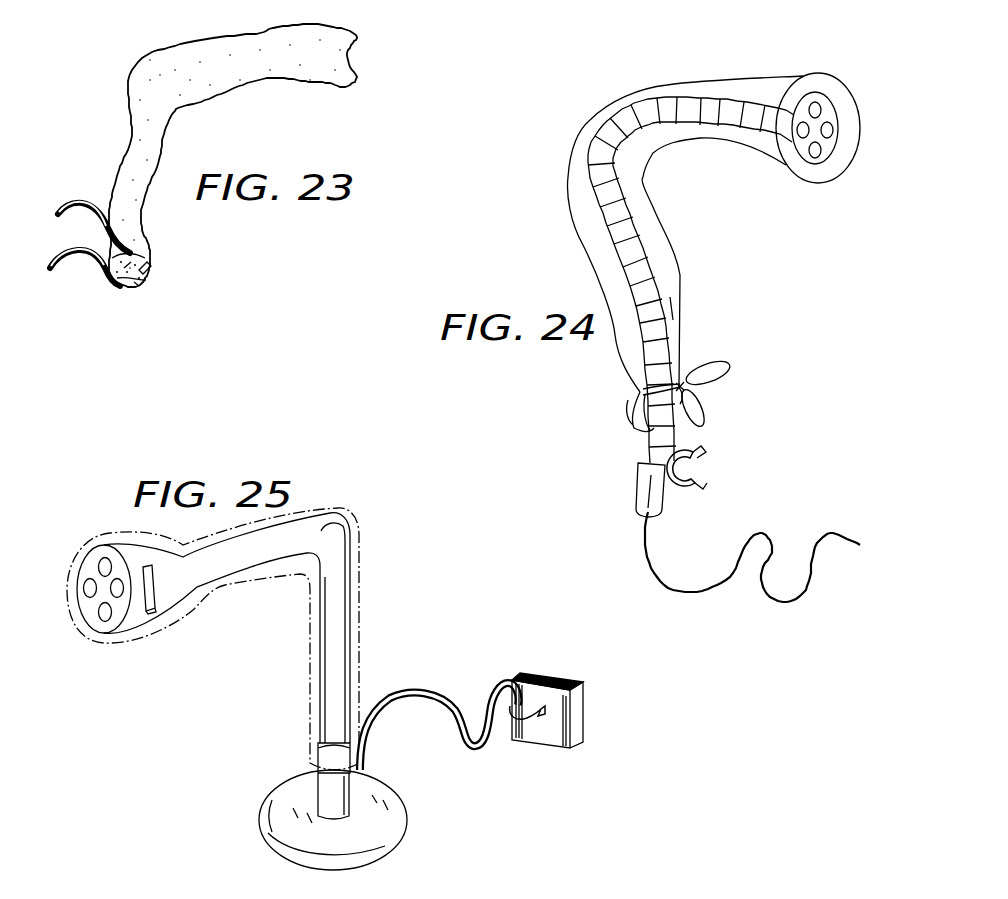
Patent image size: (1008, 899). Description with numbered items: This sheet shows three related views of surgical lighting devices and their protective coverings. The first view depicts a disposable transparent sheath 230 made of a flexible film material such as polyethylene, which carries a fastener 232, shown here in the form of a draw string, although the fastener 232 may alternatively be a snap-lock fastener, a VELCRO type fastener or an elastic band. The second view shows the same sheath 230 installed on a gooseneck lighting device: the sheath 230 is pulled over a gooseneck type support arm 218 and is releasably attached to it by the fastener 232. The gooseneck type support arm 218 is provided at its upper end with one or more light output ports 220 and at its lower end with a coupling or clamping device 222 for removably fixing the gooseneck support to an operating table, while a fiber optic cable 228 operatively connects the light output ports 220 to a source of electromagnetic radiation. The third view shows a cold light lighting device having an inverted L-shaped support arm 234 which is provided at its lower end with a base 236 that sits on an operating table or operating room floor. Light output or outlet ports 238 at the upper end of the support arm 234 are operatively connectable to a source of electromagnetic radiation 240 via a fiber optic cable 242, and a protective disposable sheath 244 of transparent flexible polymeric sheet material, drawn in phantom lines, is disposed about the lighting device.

In FIG. 24, the gooseneck type support arm 218 is at (598, 177).
In FIG. 24, the light output ports 220 is at (820, 110).
In FIG. 24, the coupling or clamping device 222 is at (683, 500).
In FIG. 24, the fiber optic cable 228 is at (663, 587).
In FIG. 23, the disposable transparent sheath 230 is at (270, 38).
In FIG. 24, the disposable transparent sheath 230 is at (713, 88).
In FIG. 23, the fastener 232 is at (88, 276).
In FIG. 24, the fastener 232 is at (713, 360).
In FIG. 25, the inverted L-shaped support arm 234 is at (323, 617).
In FIG. 25, the base 236 is at (273, 840).
In FIG. 25, the light output or outlet ports 238 is at (90, 587).
In FIG. 25, the source of electromagnetic radiation 240 is at (515, 676).
In FIG. 25, the fiber optic cable 242 is at (473, 747).
In FIG. 25, the protective disposable sheath 244 is at (310, 717).